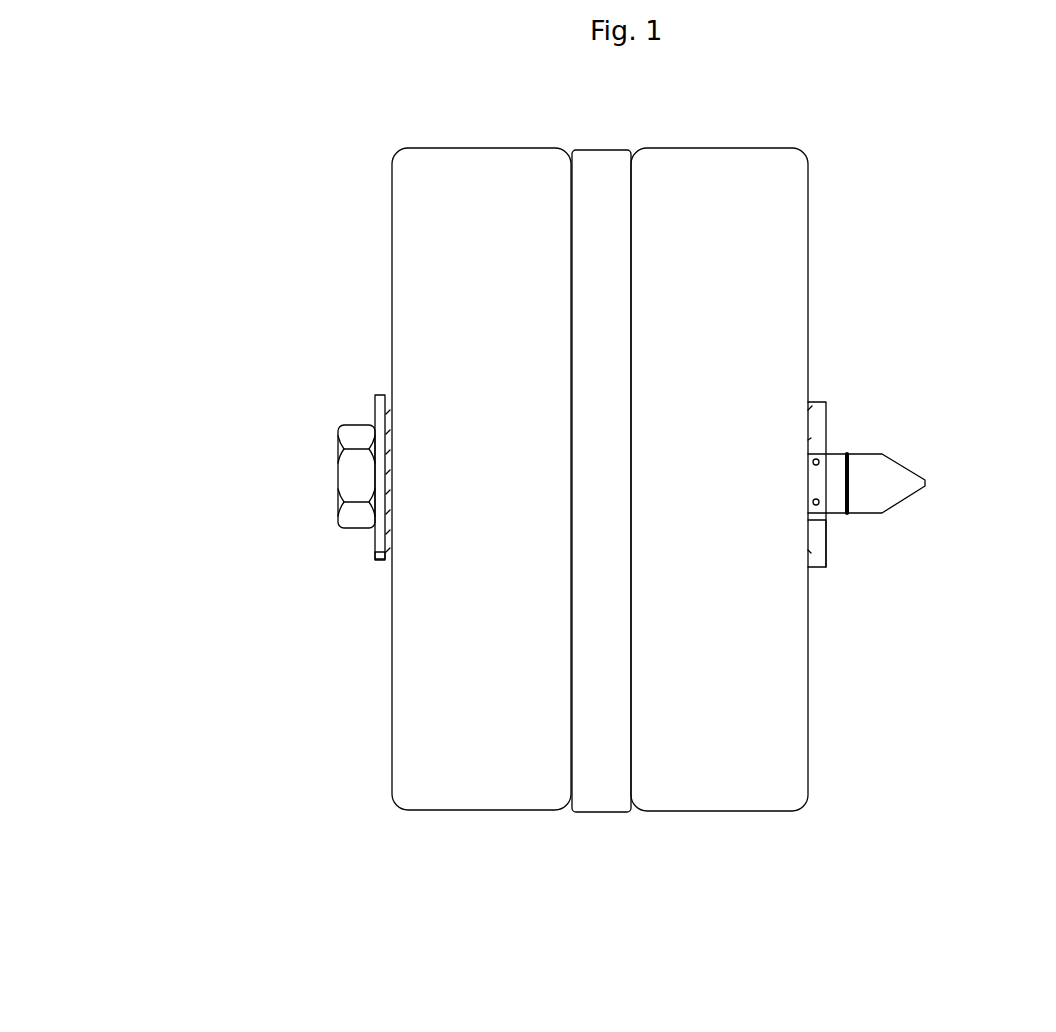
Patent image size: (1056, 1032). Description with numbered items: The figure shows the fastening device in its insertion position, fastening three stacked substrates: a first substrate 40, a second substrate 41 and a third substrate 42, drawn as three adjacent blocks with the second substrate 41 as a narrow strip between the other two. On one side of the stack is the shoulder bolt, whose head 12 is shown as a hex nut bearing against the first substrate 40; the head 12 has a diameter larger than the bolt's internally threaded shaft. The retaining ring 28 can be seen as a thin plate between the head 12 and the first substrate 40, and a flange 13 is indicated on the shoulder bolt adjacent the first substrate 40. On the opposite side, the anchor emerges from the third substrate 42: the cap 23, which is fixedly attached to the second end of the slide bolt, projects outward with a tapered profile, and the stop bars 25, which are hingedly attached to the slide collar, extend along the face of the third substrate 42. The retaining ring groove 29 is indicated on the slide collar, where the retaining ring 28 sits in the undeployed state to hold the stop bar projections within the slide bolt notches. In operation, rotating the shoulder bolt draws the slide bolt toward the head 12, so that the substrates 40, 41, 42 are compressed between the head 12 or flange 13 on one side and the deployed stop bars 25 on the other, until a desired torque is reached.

The head 12 is at (333, 470).
The flange 13 is at (378, 558).
The cap 23 is at (893, 474).
The stop bars 25 is at (826, 403).
The retaining ring 28 is at (385, 396).
The retaining ring groove 29 is at (826, 527).
The first substrate 40 is at (478, 810).
The second substrate 41 is at (597, 812).
The third substrate 42 is at (723, 811).